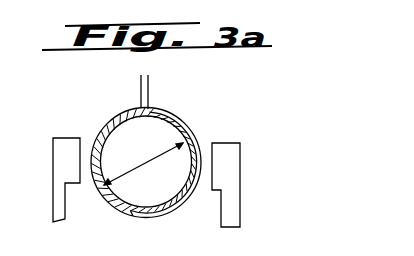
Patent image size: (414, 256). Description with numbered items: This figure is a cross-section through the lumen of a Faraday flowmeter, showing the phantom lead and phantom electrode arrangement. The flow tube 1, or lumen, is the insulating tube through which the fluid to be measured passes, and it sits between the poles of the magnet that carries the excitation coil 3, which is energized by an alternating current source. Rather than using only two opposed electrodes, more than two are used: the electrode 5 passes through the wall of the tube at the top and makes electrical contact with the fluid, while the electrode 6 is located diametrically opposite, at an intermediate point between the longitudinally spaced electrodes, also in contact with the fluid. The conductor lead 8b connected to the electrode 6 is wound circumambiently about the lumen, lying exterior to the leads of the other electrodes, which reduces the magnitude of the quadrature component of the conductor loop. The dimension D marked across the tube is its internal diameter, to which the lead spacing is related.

The flow tube 1 is at (121, 117).
The electrode 5 is at (151, 108).
The conductor lead 8b is at (187, 130).
The electrode 6 is at (128, 214).
The excitation coil 3 is at (233, 180).